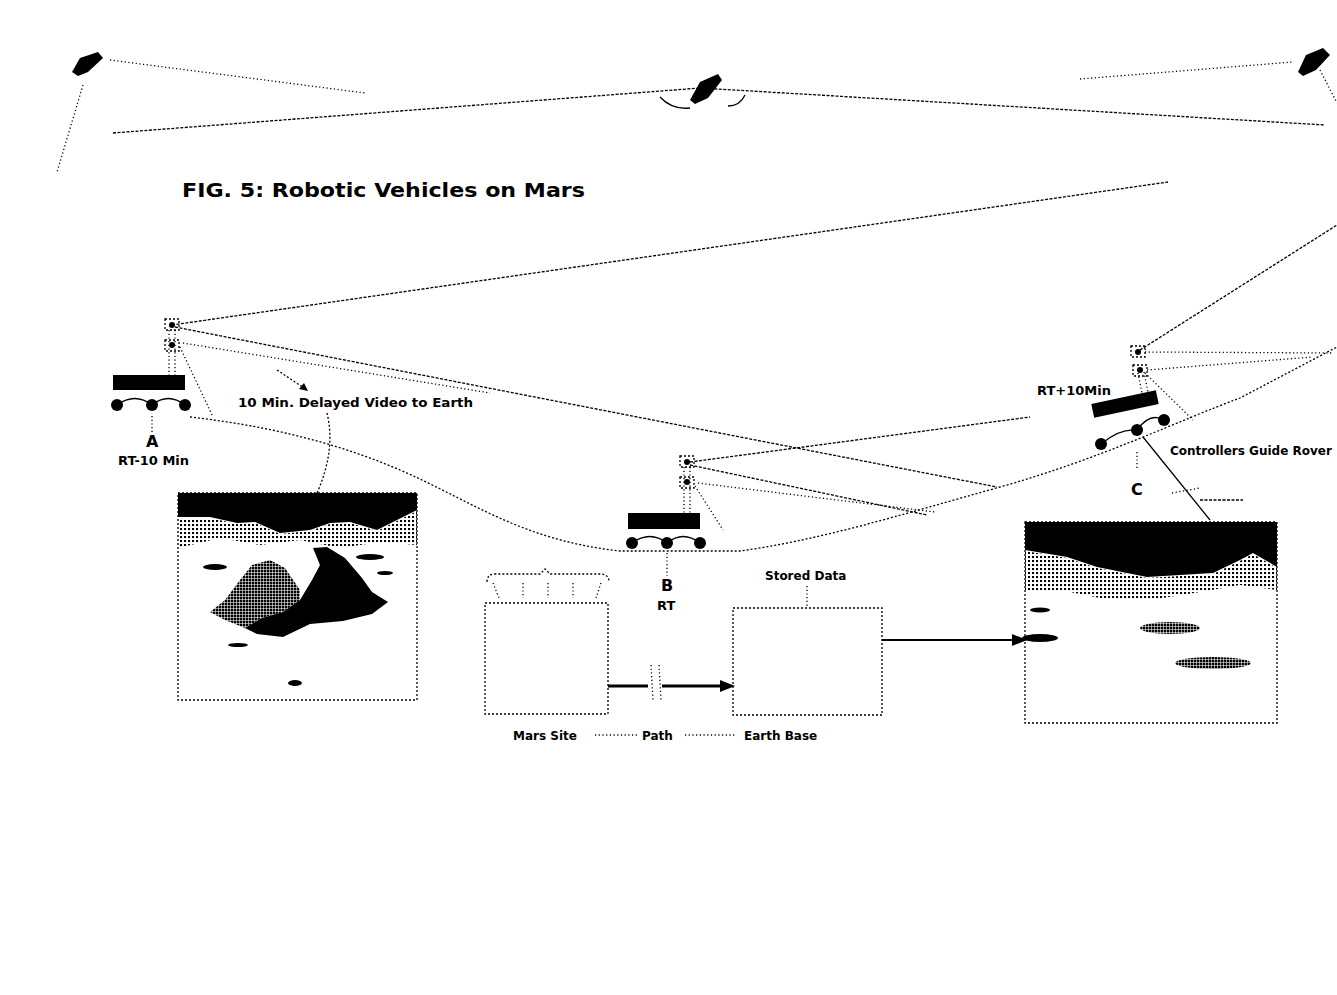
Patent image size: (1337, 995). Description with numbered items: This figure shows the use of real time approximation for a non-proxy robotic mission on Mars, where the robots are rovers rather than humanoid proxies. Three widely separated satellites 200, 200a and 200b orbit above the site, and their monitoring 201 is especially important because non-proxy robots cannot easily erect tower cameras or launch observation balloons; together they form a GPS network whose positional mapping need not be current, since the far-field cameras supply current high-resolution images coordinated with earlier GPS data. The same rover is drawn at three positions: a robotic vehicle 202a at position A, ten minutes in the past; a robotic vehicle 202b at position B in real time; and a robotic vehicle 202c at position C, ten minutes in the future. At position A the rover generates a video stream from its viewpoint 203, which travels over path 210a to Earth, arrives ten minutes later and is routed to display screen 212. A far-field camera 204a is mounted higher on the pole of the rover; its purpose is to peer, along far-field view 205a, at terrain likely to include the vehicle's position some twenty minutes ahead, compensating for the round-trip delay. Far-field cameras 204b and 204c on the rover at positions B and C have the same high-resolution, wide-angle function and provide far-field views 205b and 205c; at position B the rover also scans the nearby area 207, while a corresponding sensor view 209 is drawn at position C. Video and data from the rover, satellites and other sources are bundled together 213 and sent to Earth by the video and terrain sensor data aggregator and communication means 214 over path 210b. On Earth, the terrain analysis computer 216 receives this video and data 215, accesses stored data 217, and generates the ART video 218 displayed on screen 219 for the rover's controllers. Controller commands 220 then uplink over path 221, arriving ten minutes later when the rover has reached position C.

The satellite 200 is at (695, 84).
The satellite 200a is at (96, 72).
The satellite 200b is at (1297, 79).
The monitoring 201 is at (702, 106).
The robotic vehicle 202a is at (150, 373).
The robotic vehicle 202b is at (657, 511).
The robotic vehicle 202c is at (1092, 415).
The viewpoint 203 is at (222, 350).
The far-field camera 204a is at (170, 319).
The far-field camera 204b is at (680, 460).
The far-field camera 204c is at (1130, 351).
The far-field view 205a is at (310, 306).
The far-field view 205b is at (824, 490).
The far-field view 205c is at (1203, 311).
The scanning area 207 is at (740, 492).
The sensor field of view of vehicle C 209 is at (1177, 396).
The path 210a is at (325, 437).
The path 210b is at (656, 693).
The display screen 212 is at (296, 708).
The bundled video and data 213 is at (548, 566).
The video and terrain sensor data aggregator and communication means 214 is at (483, 701).
The video and data 215 is at (677, 685).
The terrain analysis computer 216 is at (752, 608).
The stored data 217 is at (810, 597).
The ART video 218 is at (996, 636).
The screen 219 is at (1172, 727).
The controller commands 220 is at (1236, 500).
The path 221 is at (1168, 492).